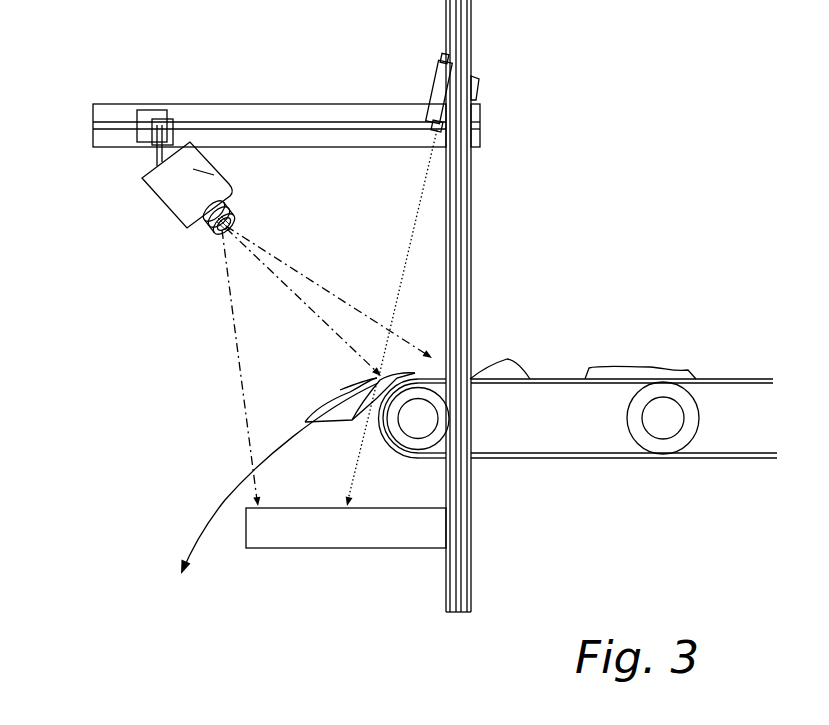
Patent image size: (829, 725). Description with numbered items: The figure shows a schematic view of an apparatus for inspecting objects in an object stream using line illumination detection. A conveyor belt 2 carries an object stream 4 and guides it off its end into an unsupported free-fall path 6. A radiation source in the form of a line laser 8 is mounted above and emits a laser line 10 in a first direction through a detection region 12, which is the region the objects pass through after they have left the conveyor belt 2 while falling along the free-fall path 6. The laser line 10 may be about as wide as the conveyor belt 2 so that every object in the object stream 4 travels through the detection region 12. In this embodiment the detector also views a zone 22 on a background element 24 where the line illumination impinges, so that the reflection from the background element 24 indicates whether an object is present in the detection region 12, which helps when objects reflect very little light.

The conveyor belt 2 is at (578, 460).
The object stream 4 is at (181, 206).
The free-fall path 6 is at (210, 526).
The line laser 8 is at (440, 90).
The laser line 10 is at (413, 237).
The detection region 12 is at (377, 378).
The zone 22 is at (423, 540).
The background element 24 is at (370, 510).